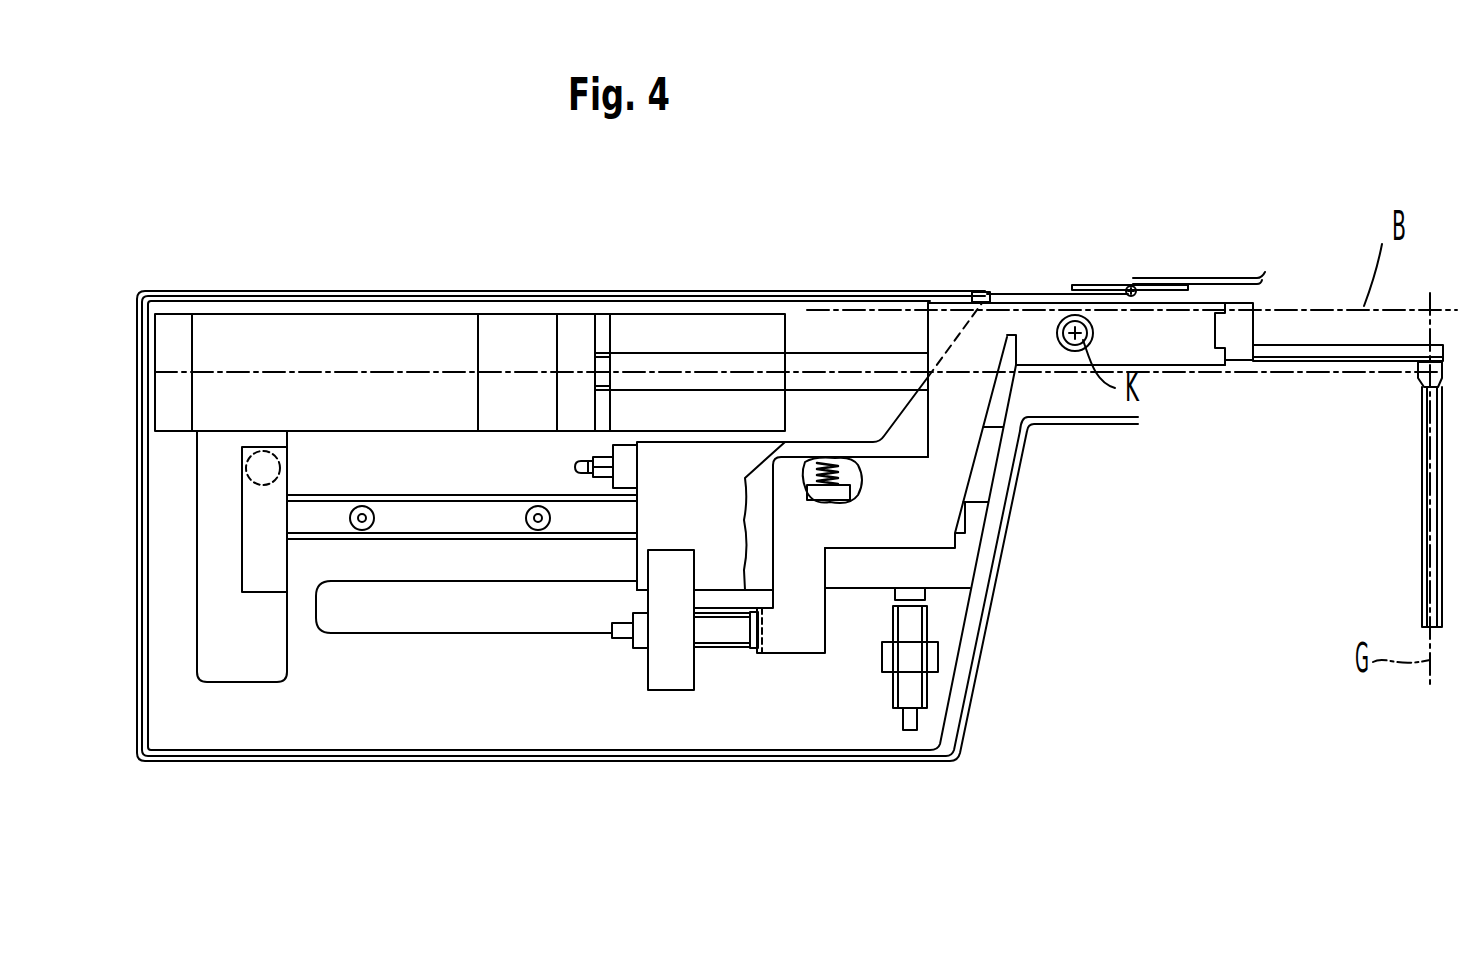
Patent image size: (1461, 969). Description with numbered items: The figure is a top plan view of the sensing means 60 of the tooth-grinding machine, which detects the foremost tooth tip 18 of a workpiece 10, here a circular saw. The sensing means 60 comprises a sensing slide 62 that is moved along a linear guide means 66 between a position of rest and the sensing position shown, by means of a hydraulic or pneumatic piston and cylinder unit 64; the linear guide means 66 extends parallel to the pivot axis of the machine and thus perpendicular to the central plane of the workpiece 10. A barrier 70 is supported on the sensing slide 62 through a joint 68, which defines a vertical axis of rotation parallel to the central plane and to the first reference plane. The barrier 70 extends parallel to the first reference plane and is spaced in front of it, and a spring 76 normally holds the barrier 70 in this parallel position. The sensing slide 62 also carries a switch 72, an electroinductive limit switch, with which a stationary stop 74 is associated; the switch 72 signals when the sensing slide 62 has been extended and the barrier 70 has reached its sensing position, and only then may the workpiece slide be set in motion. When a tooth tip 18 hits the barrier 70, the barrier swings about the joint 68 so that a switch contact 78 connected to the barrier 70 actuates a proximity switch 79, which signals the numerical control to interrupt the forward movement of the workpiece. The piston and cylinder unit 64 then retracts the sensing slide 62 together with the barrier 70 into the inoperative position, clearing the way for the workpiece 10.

The sensing means 60 is at (890, 263).
The piston and cylinder unit 64 is at (373, 340).
The linear guide means 66 is at (446, 512).
The sensing slide 62 is at (707, 517).
The joint 68 is at (1062, 317).
The barrier 70 is at (1330, 352).
The tooth tip 18 is at (1417, 372).
The workpiece 10 is at (1422, 515).
The spring 76 is at (855, 470).
The stationary stop 74 is at (922, 597).
The switch 72 is at (922, 630).
The switch contact 78 is at (763, 628).
The proximity switch 79 is at (722, 632).